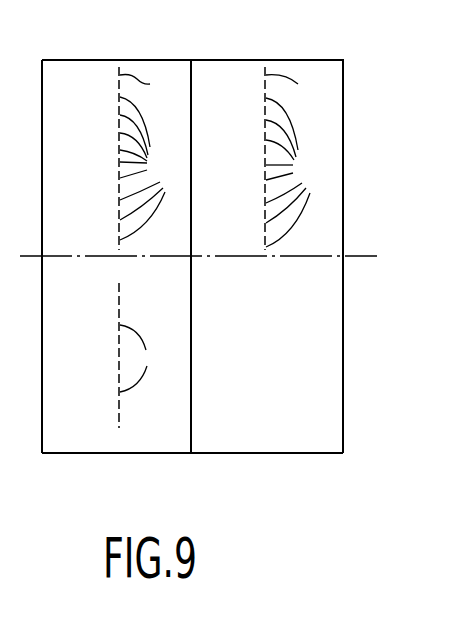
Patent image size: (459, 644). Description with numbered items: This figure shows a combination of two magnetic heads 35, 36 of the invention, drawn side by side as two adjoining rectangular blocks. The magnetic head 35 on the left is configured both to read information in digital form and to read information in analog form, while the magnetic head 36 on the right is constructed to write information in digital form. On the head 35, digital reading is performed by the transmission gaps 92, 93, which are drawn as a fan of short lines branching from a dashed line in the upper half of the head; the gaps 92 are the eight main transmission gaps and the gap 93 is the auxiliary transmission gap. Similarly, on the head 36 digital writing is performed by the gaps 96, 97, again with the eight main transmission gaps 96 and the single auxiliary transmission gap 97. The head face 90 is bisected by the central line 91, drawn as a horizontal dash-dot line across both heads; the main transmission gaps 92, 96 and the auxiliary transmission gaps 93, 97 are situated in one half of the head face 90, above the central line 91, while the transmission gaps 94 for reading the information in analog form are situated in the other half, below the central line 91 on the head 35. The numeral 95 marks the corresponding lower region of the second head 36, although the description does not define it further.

The magnetic head 35 is at (68, 59).
The magnetic head 36 is at (222, 60).
The head face 90 is at (78, 444).
The central line 91 is at (364, 255).
The main transmission gaps 92 is at (146, 158).
The auxiliary transmission gap 93 is at (146, 84).
The transmission gaps 94 is at (145, 355).
The second section 95 is at (285, 444).
The main transmission gaps 96 is at (293, 158).
The auxiliary transmission gap 97 is at (293, 88).